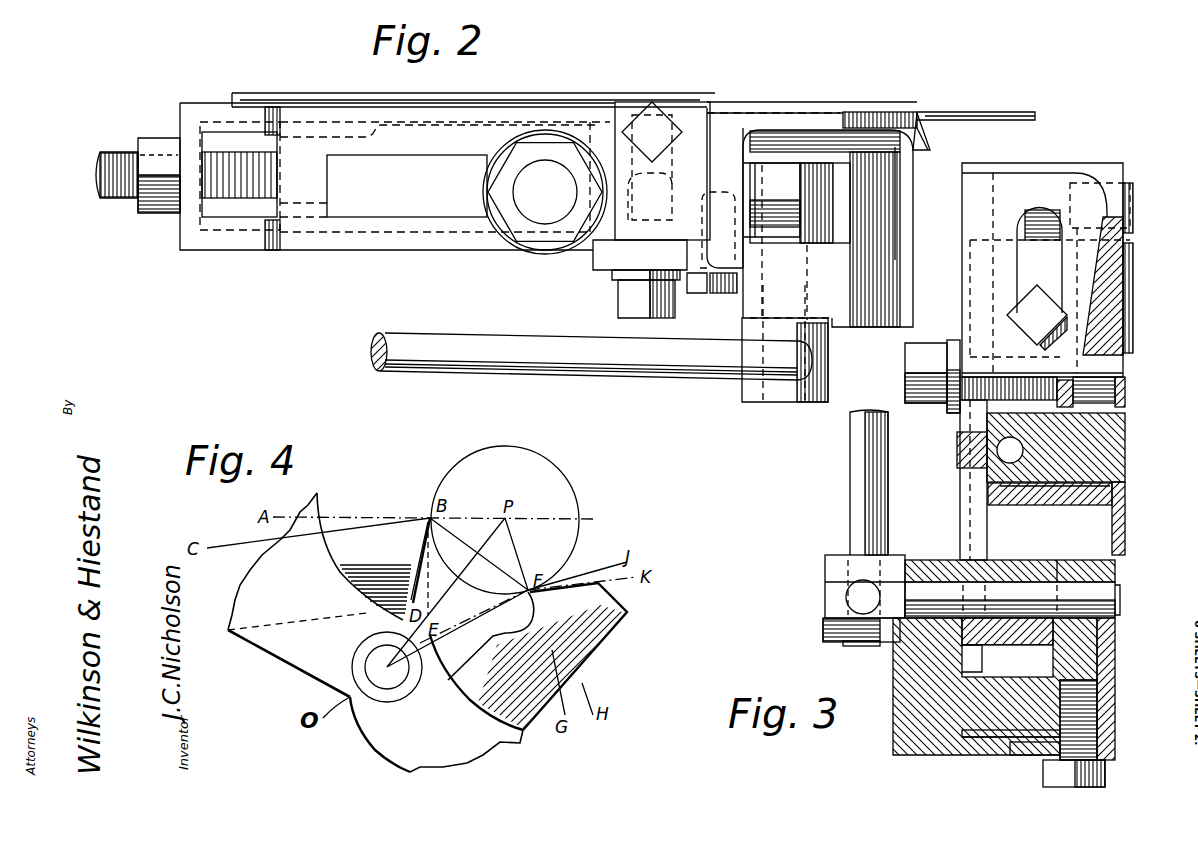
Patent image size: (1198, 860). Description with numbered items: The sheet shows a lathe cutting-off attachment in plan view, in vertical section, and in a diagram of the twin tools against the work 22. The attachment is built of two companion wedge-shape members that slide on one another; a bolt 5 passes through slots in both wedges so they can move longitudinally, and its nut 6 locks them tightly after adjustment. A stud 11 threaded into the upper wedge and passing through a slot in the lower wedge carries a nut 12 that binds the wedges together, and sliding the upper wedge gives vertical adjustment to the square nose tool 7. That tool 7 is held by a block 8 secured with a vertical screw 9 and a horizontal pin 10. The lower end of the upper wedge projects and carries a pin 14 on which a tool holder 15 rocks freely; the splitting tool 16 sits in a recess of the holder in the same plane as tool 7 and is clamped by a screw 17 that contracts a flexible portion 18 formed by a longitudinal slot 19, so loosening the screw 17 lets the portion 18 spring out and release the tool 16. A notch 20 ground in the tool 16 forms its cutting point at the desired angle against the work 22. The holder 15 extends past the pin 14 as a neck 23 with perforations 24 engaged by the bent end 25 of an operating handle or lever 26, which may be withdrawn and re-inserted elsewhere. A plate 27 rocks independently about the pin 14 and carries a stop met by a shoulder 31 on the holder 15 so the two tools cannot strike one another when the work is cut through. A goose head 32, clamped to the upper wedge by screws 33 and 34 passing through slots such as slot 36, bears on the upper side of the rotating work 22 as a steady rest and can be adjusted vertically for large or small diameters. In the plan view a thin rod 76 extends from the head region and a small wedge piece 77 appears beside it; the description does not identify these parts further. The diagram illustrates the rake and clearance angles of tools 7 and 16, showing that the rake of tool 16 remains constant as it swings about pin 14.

In FIG. 2, the bolt 5 is at (543, 203).
In FIG. 2, the nut 6 is at (567, 250).
In FIG. 3, the square nose tool 7 is at (1125, 533).
In FIG. 4, the square nose tool 7 is at (365, 533).
In FIG. 3, the block 8 is at (1125, 438).
In FIG. 2, the vertical screw 9 is at (665, 128).
In FIG. 3, the vertical screw 9 is at (1125, 388).
In FIG. 3, the horizontal pin 10 is at (1010, 450).
In FIG. 2, the stud 11 is at (108, 200).
In FIG. 2, the nut 12 is at (160, 208).
In FIG. 3, the pin 14 is at (1100, 602).
In FIG. 4, the pin 14 is at (405, 690).
In FIG. 3, the tool holder 15 is at (915, 710).
In FIG. 3, the tool 16 is at (1115, 703).
In FIG. 4, the tool 16 is at (575, 668).
In FIG. 3, the screw 17 is at (1105, 773).
In FIG. 2, the flexible portion 18 is at (890, 276).
In FIG. 3, the flexible portion 18 is at (1020, 752).
In FIG. 2, the slot 19 is at (893, 232).
In FIG. 3, the slot 19 is at (985, 742).
In FIG. 4, the notch 20 is at (541, 612).
In FIG. 4, the work 22 is at (553, 472).
In FIG. 2, the neck 23 is at (780, 400).
In FIG. 3, the neck 23 is at (830, 640).
In FIG. 3, the perforations 24 is at (846, 597).
In FIG. 3, the bent end 25 is at (860, 648).
In FIG. 2, the operating handle or lever 26 is at (722, 383).
In FIG. 3, the operating handle or lever 26 is at (853, 485).
In FIG. 3, the plate 27 is at (968, 538).
In FIG. 3, the shoulder 31 is at (1007, 661).
In FIG. 2, the goose head 32 is at (845, 127).
In FIG. 3, the goose head 32 is at (1125, 172).
In FIG. 2, the screw 33 is at (628, 300).
In FIG. 3, the screw 33 is at (905, 368).
In FIG. 3, the screw 34 is at (1067, 315).
In FIG. 3, the slot 36 is at (1017, 272).
In FIG. 2, the rod 76 is at (1028, 112).
In FIG. 2, the wedge 77 is at (922, 152).